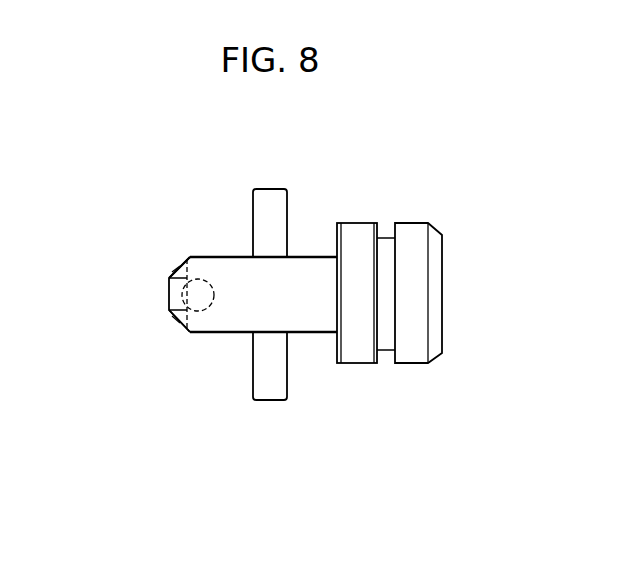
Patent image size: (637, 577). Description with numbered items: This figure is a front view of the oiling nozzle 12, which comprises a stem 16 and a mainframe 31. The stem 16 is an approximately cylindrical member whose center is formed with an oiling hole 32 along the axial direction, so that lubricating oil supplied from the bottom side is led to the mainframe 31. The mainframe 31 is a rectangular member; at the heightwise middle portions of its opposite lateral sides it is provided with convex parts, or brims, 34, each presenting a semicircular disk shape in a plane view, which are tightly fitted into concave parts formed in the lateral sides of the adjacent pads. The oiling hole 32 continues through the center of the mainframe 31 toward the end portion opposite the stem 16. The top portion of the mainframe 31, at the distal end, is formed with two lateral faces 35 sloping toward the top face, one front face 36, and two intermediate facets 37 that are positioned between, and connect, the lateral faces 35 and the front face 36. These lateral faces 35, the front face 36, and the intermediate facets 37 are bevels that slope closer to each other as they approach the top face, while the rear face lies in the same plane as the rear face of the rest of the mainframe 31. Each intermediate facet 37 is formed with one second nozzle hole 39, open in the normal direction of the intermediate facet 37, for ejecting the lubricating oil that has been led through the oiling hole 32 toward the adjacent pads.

The oiling nozzle 12 is at (312, 333).
The stem 16 is at (412, 240).
The mainframe 31 is at (302, 273).
The oiling hole 32 is at (205, 312).
The convex part 34 is at (270, 202).
The lateral face 35 is at (178, 266).
The front face 36 is at (170, 293).
The intermediate facet 37 is at (170, 282).
The nozzle hole 39 is at (176, 272).